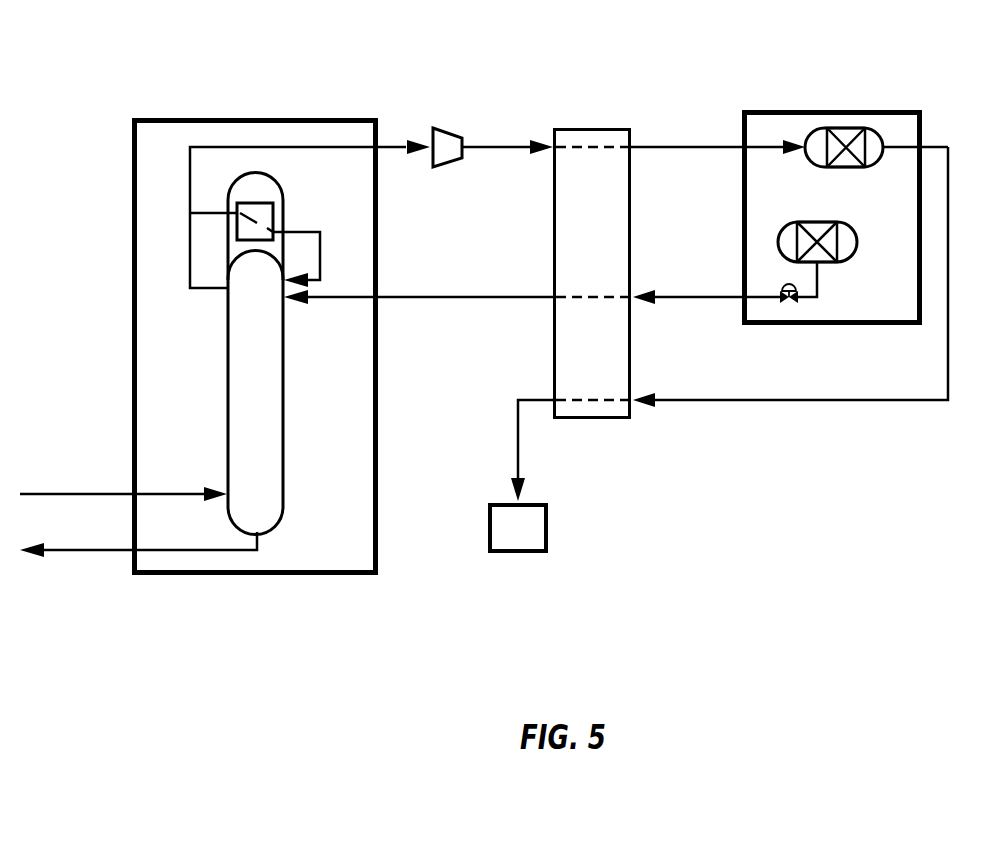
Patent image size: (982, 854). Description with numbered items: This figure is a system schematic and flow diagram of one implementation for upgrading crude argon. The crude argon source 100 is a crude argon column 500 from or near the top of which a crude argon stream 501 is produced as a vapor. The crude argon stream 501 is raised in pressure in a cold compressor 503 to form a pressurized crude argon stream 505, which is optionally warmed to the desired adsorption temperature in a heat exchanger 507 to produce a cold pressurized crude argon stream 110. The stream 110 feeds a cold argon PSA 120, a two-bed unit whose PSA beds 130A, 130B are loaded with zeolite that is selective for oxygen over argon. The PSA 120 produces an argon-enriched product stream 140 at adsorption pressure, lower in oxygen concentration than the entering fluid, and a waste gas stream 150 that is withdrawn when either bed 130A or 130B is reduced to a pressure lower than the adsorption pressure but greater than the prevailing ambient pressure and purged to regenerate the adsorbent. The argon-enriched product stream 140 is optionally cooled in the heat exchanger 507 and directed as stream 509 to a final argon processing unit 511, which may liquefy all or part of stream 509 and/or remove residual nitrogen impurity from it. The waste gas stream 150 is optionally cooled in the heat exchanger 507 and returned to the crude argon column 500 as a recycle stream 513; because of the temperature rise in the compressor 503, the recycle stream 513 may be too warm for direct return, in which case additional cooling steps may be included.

The crude argon source 100 is at (132, 208).
The cold pressurized crude argon stream 110 is at (698, 118).
The cold Ar PSA 120 is at (857, 110).
The PSA bed 130A is at (853, 167).
The PSA bed 130B is at (816, 196).
The argon-enriched product stream 140 is at (884, 372).
The waste gas stream 150 is at (697, 298).
The crude argon column 500 is at (227, 363).
The crude argon stream 501 is at (340, 148).
The cold compressor 503 is at (443, 128).
The pressurized crude argon stream 505 is at (509, 148).
The heat exchanger 507 is at (585, 128).
The argon product stream to final processing 509 is at (518, 421).
The final argon processing unit 511 is at (548, 530).
The recycle stream 513 is at (498, 298).